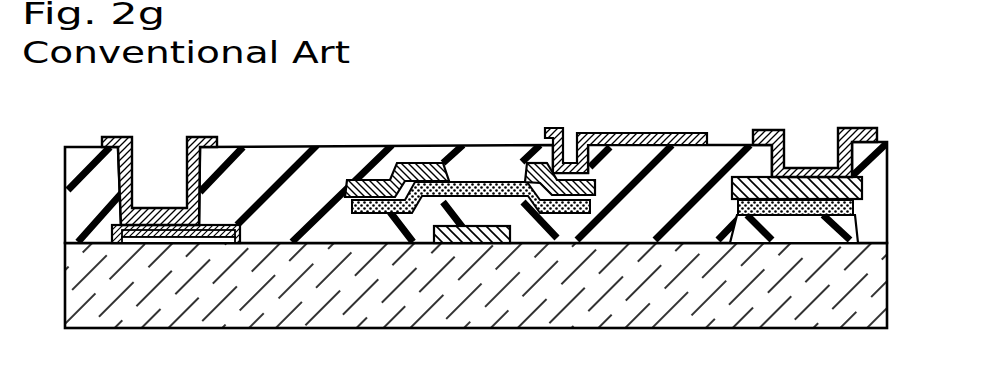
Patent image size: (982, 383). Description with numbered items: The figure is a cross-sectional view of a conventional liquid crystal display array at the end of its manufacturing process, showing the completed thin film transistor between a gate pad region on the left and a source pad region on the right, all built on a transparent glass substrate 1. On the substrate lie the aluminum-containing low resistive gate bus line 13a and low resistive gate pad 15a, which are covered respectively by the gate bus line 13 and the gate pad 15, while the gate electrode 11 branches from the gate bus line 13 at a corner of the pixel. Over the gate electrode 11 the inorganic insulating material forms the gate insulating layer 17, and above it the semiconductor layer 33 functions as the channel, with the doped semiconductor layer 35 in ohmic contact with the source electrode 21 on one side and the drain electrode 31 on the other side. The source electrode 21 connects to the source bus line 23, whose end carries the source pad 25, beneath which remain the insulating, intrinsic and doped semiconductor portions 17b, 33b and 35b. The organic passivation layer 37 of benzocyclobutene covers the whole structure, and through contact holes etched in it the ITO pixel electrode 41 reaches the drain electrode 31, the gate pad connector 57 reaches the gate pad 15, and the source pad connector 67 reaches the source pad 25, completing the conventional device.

The transparent glass substrate 1 is at (597, 308).
The gate electrode 11 is at (468, 244).
The gate bus line 13 is at (238, 244).
The low resistive gate bus line 13a is at (213, 244).
The gate pad 15 is at (122, 244).
The low resistive gate pad 15a is at (150, 244).
The source electrode line 17 is at (386, 230).
The data pad 17b is at (788, 228).
The source electrode 21 is at (418, 163).
The source bus line 23 is at (356, 179).
The source pad 25 is at (832, 244).
The drain electrode 31 is at (524, 172).
The semiconductor layer 33 is at (472, 182).
The semiconductor pad layer 33b is at (740, 232).
The doped semiconductor layer 35 is at (348, 199).
The gate insulating pad layer 35b is at (757, 200).
The organic passivation layer 37 is at (90, 147).
The pixel electrode 41 is at (618, 133).
The gate pad connector 57 is at (153, 208).
The source pad connector 67 is at (815, 168).